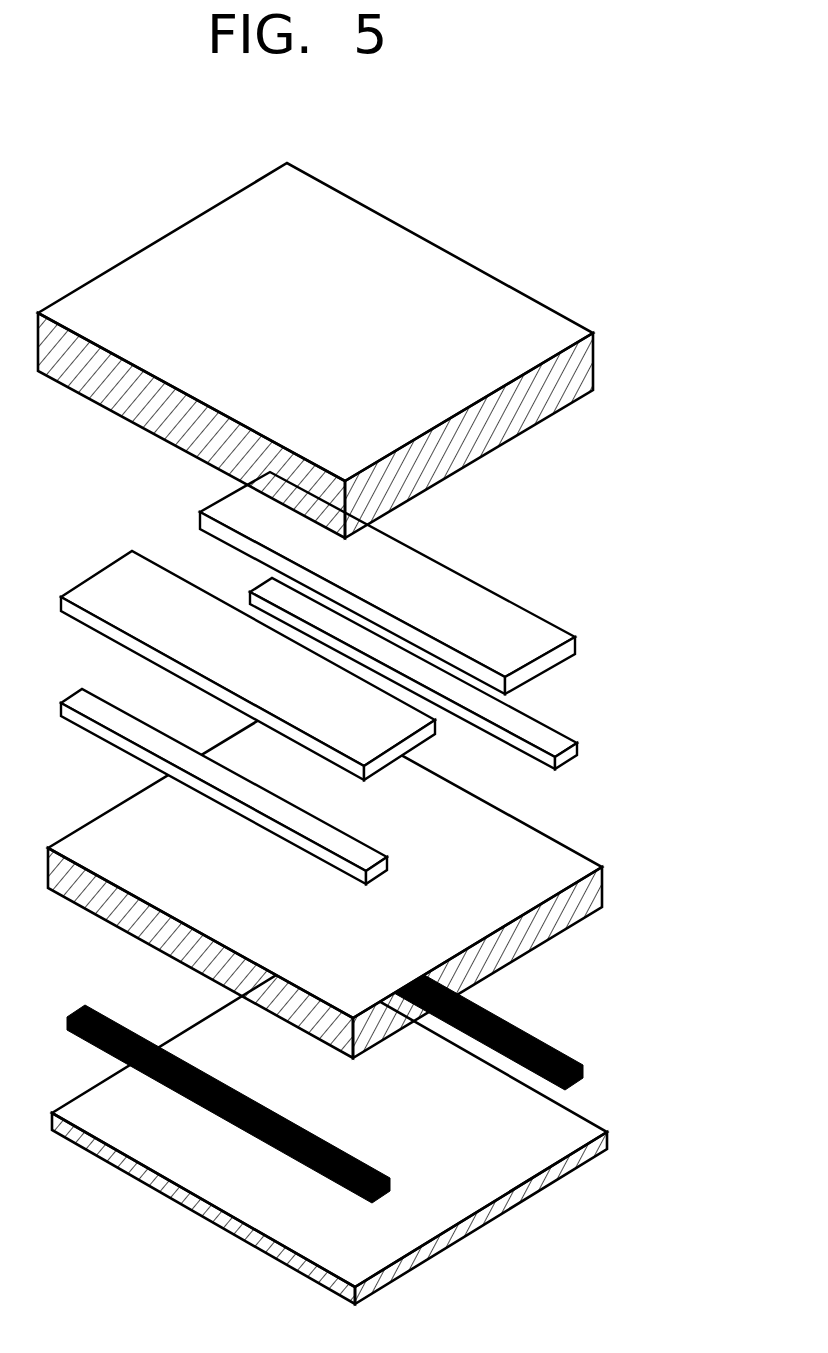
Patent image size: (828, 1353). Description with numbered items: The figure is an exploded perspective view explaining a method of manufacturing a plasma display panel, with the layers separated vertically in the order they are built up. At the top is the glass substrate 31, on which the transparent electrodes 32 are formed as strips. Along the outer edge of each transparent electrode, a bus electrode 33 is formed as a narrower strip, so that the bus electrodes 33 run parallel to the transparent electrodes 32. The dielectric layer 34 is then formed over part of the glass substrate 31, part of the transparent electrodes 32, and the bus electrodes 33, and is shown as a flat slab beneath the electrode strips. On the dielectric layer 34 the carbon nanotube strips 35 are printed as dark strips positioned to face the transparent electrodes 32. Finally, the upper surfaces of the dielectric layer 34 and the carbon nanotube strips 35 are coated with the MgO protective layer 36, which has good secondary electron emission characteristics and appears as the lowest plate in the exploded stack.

The glass substrate 31 is at (577, 375).
The transparent electrodes 32 is at (538, 632).
The bus electrodes 33 is at (578, 750).
The dielectric layer 34 is at (588, 897).
The carbon nanotube strips 35 is at (583, 1068).
The MgO protective layer 36 is at (608, 1143).